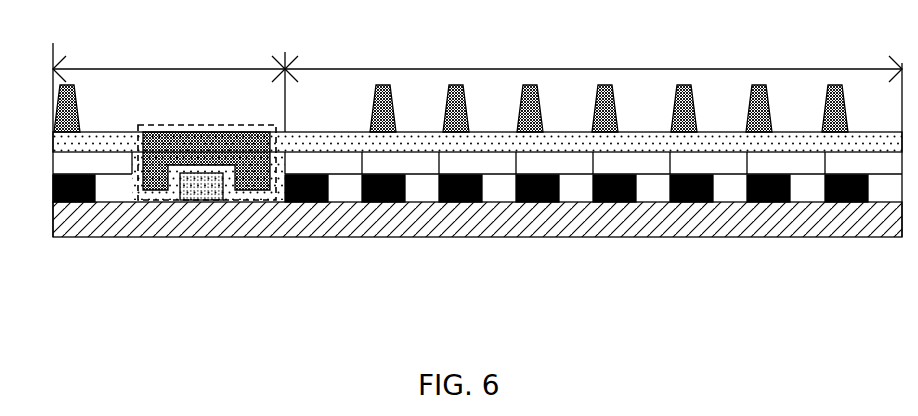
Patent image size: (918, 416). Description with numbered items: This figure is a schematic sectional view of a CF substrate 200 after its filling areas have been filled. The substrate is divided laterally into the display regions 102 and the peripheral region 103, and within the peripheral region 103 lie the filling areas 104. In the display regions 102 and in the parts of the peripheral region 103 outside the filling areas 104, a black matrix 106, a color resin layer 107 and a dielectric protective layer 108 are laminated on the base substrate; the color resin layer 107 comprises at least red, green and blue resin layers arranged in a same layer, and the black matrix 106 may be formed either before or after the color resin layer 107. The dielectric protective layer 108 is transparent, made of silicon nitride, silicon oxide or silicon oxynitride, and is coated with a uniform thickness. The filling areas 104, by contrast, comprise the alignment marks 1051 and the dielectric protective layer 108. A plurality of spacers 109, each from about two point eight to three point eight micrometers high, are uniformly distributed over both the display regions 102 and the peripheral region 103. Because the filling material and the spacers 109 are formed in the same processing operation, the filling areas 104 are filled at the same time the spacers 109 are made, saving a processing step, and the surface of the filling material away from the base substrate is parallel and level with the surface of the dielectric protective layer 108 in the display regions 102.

The CF substrate 200 is at (487, 305).
The display regions 102 is at (525, 69).
The peripheral region 103 is at (118, 69).
The filling areas 104 is at (253, 125).
The alignment marks 1051 is at (200, 202).
The black matrix 106 is at (372, 202).
The color resin layer 107 is at (502, 165).
The dielectric protective layer 108 is at (587, 140).
The spacers 109 is at (380, 85).